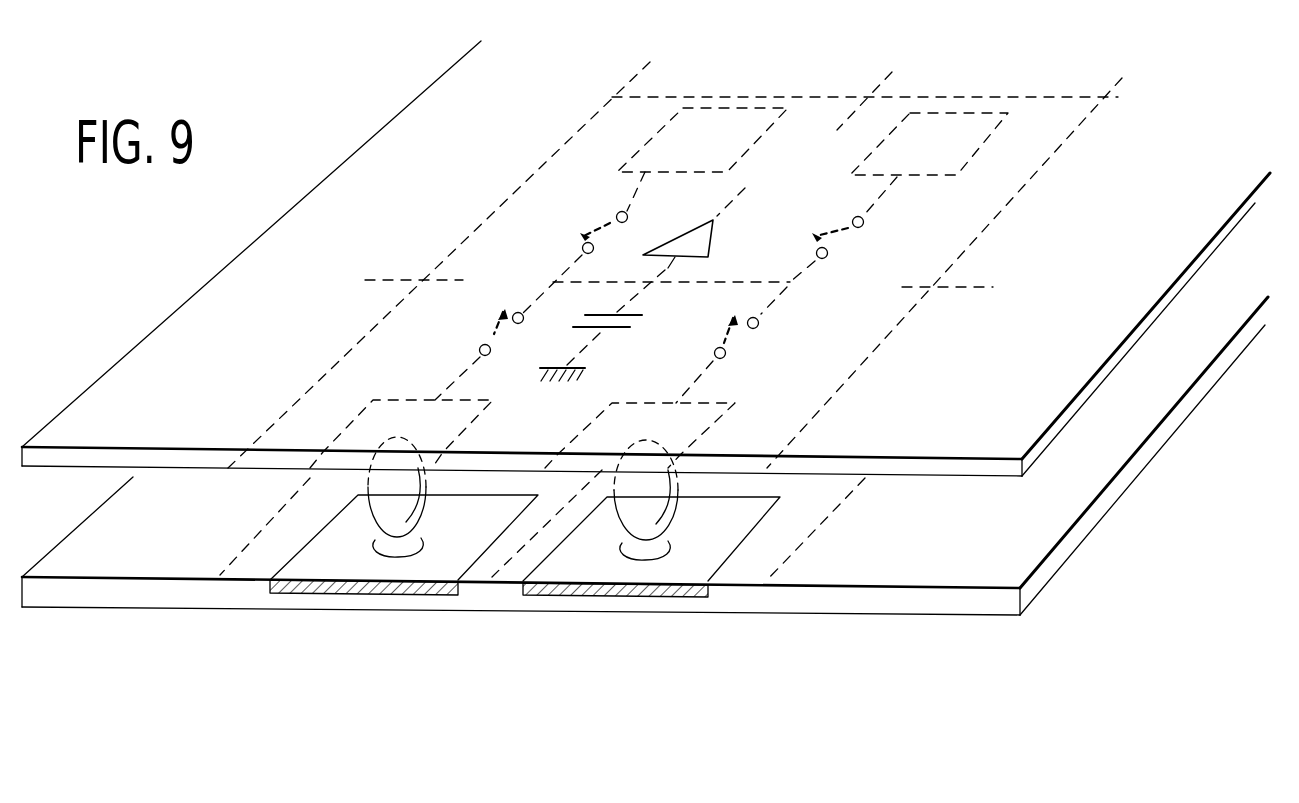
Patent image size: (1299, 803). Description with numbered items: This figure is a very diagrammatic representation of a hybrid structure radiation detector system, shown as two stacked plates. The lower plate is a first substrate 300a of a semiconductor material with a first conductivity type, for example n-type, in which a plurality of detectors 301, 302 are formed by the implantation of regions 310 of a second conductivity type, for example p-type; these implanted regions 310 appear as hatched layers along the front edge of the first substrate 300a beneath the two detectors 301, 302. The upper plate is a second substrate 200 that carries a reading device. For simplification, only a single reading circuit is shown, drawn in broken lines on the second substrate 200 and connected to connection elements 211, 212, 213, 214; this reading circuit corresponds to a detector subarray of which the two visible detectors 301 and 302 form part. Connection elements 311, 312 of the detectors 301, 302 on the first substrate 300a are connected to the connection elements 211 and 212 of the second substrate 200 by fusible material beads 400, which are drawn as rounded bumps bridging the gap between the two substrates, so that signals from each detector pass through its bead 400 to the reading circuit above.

The second substrate 200 is at (1162, 188).
The connection element 211 is at (365, 413).
The connection element 212 is at (735, 408).
The connection element 213 is at (978, 105).
The connection element 214 is at (730, 115).
The first substrate 300a is at (942, 606).
The detector 301 is at (350, 618).
The detector 302 is at (639, 628).
The implanted region 310 is at (316, 592).
The connection element 311 is at (398, 546).
The connection element 312 is at (653, 548).
The fusible material bead 400 is at (372, 478).